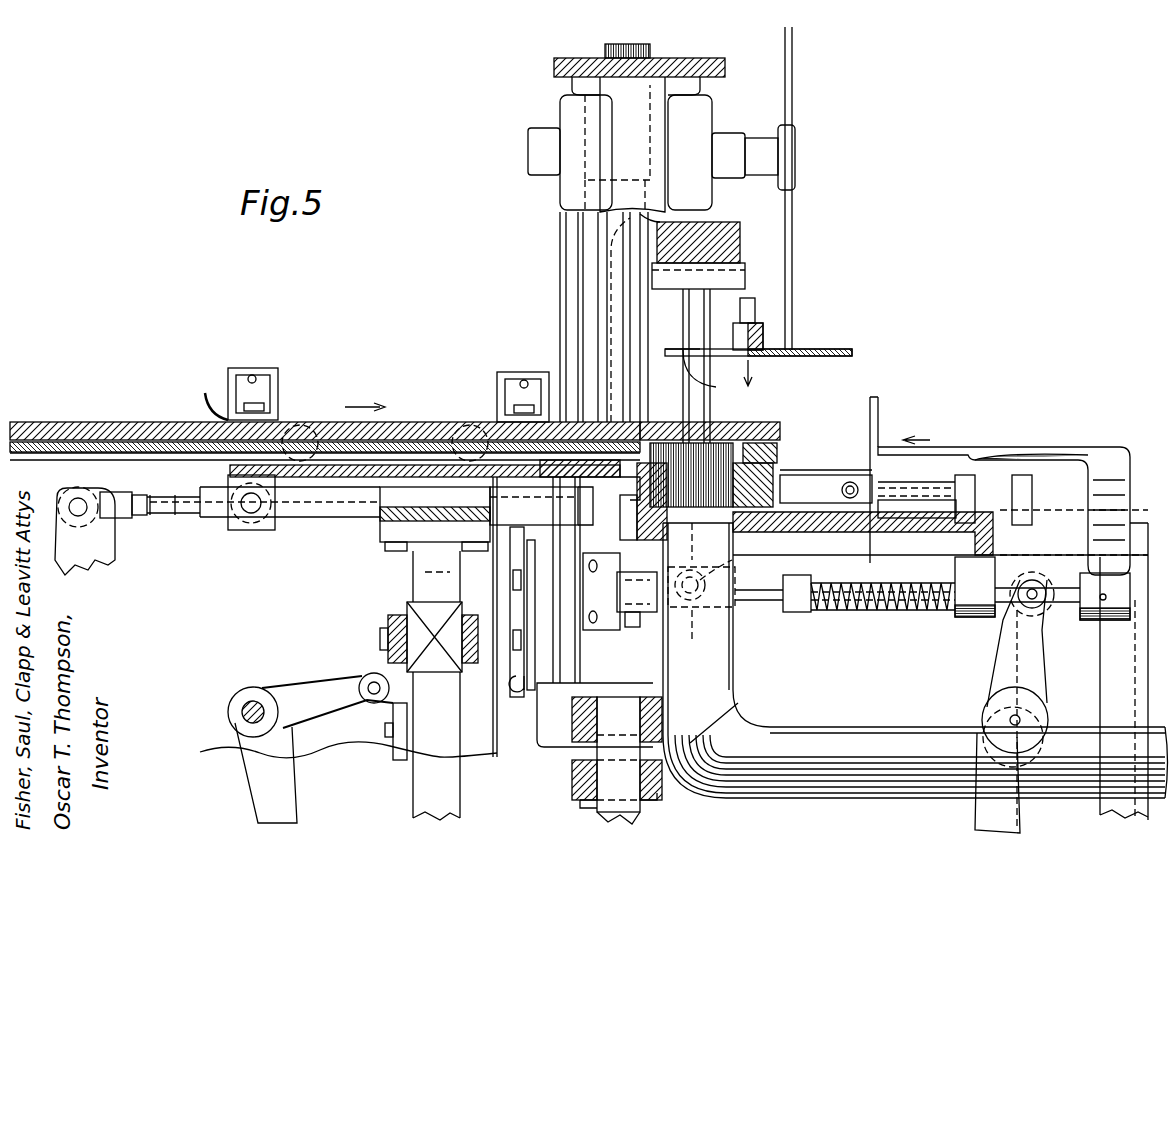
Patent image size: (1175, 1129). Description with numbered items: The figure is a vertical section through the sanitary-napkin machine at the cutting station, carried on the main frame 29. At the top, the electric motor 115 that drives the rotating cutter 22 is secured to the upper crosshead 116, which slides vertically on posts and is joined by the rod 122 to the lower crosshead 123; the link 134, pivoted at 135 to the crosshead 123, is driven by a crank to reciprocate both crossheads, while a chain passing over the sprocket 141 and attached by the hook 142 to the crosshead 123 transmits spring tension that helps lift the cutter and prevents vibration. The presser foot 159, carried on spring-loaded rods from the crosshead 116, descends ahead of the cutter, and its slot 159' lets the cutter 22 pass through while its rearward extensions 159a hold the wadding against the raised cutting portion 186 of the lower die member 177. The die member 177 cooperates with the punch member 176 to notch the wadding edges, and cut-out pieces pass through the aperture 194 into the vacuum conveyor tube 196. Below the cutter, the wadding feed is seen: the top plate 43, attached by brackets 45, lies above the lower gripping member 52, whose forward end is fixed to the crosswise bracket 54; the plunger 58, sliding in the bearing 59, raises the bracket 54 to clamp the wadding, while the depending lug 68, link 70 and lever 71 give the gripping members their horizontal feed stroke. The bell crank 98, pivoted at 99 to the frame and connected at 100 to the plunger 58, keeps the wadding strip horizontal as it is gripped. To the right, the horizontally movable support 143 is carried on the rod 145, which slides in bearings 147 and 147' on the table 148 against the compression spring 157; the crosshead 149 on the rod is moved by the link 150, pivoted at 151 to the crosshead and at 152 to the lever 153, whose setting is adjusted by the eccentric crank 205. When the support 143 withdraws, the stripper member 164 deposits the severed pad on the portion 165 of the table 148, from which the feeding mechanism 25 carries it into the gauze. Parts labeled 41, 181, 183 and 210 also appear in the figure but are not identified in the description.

The crosshead 116 is at (566, 62).
The electric motor 115 is at (563, 113).
The cutter 22 is at (793, 87).
The rod 122 is at (566, 272).
The block 181 is at (700, 218).
The punch member 176 is at (736, 276).
The stem 183 is at (700, 307).
The presser foot 159 is at (758, 342).
The slot 159' is at (749, 365).
The rearward extension 159a is at (686, 352).
The beam 41 is at (418, 430).
The cutting portion 186 is at (752, 428).
The top plate 43 is at (298, 420).
The lower gripping member 52 is at (395, 430).
The bracket 54 is at (338, 470).
The bracket 45 is at (232, 367).
The plunger 58 is at (385, 540).
The bearing 59 is at (392, 610).
The link 70 is at (213, 510).
The lever 71 is at (92, 540).
The depending lug 68 is at (262, 526).
The bell crank 98 is at (298, 690).
The pivot 99 is at (250, 700).
The pivotal connection 100 is at (372, 685).
The sprocket 141 is at (535, 612).
The hook 142 is at (532, 697).
The crosshead 123 is at (575, 725).
The pivotal connection 135 is at (590, 780).
The link 134 is at (640, 830).
The aperture 194 is at (696, 599).
The vacuum conveyor tube 196 is at (855, 727).
The lower die member 177 is at (777, 455).
The table portion 165 is at (810, 480).
The plate edge 210 is at (830, 465).
The stripper member 164 is at (880, 410).
The support 143 is at (960, 447).
The feeding mechanism 25 is at (925, 492).
The table member 148 is at (840, 528).
The pivotal connection 151 is at (715, 583).
The bearing 147' is at (650, 596).
The crosshead 149 is at (635, 612).
The rod 145 is at (760, 600).
The compression spring 157 is at (882, 608).
The bearing 147 is at (1012, 602).
The link 150 is at (1020, 603).
The pivotal connection 152 is at (1045, 612).
The lever 153 is at (1000, 688).
The crank 205 is at (990, 748).
The main frame 29 is at (1107, 680).